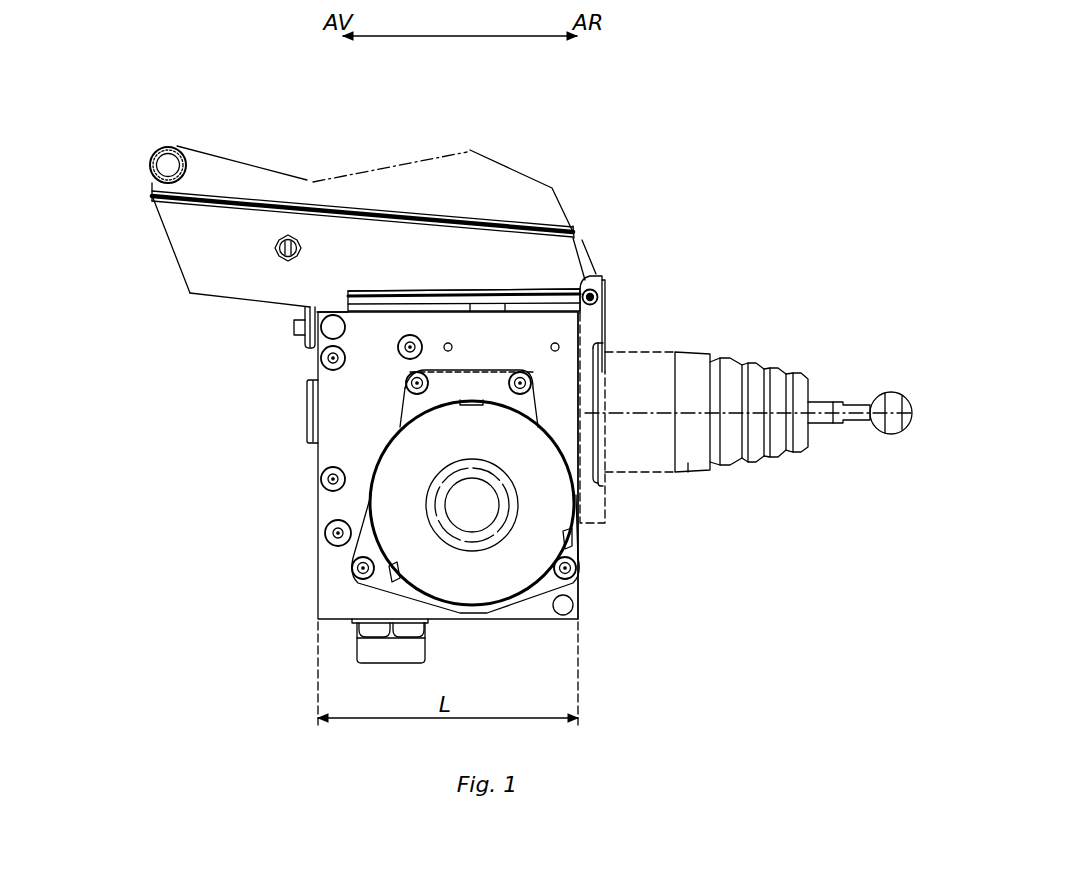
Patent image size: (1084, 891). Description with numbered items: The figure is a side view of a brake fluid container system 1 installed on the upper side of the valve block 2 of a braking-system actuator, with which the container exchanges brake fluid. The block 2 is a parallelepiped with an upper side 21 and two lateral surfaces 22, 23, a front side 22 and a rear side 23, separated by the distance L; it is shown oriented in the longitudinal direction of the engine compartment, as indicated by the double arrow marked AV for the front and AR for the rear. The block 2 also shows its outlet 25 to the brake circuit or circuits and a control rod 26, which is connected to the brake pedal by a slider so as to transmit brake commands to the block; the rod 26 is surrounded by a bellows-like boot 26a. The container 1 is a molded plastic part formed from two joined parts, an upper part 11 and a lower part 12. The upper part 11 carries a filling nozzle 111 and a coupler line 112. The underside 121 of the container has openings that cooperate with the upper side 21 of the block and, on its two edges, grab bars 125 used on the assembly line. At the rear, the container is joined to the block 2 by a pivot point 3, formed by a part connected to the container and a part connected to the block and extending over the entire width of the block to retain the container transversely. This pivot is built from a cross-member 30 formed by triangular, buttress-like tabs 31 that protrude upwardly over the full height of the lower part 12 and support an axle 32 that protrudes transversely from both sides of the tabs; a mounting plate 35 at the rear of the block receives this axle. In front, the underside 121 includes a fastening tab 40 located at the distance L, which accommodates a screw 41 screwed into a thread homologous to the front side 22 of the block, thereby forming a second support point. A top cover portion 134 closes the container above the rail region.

The brake fluid container system 1 is at (110, 165).
The upper part 11 is at (152, 186).
The filling nozzle 111 is at (164, 149).
The coupler line 112 is at (292, 236).
The lower part 12 is at (196, 247).
The underside of container 121 is at (214, 301).
The grab bars 125 is at (433, 290).
The top cover 134 is at (570, 282).
The valve block 2 is at (294, 522).
The upper side of block 21 is at (538, 319).
The front lateral surface 22 is at (313, 462).
The rear lateral surface 23 is at (584, 558).
The outlet 25 is at (327, 361).
The control rod 26 is at (825, 402).
The bellows 26a is at (755, 448).
The pivot point 3 is at (657, 271).
The cross-member 30 is at (587, 246).
The tabs 31 is at (581, 266).
The axle 32 is at (600, 297).
The mounting plate 35 is at (591, 503).
The fastening tab 40 is at (307, 343).
The screw 41 is at (300, 325).